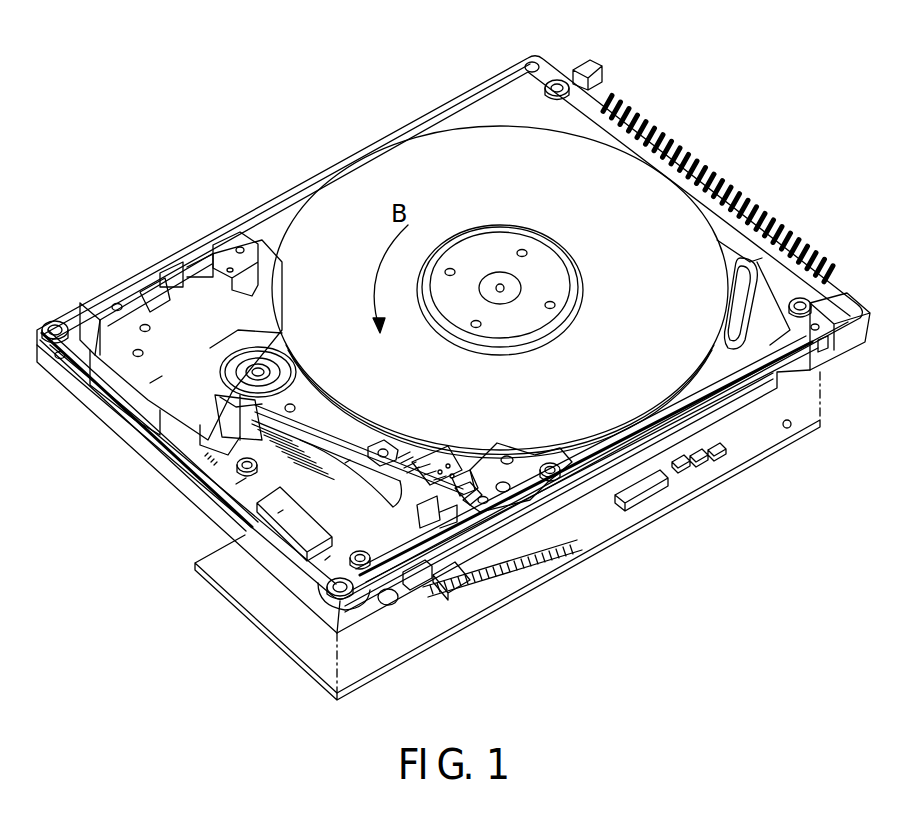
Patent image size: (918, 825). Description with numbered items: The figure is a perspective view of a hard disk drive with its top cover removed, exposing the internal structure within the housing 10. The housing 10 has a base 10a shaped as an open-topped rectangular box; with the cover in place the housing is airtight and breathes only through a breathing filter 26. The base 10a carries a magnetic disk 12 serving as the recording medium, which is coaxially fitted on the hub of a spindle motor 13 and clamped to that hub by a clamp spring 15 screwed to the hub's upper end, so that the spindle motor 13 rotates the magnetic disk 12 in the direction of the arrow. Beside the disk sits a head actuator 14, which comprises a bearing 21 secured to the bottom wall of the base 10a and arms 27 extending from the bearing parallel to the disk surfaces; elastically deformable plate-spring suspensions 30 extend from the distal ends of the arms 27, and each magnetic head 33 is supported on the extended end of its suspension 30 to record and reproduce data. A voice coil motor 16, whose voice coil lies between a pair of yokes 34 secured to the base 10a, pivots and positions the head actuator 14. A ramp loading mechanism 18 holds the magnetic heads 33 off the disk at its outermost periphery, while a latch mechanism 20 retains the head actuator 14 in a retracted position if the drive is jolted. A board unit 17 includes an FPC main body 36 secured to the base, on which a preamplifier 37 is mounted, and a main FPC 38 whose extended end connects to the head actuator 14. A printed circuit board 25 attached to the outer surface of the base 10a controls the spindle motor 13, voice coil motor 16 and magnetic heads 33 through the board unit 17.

The housing 10 is at (487, 76).
The base 10a is at (427, 550).
The magnetic disk 12 is at (420, 160).
The spindle motor 13 is at (586, 286).
The head actuator 14 is at (303, 399).
The clamp spring 15 is at (532, 237).
The voice coil motor 16 is at (152, 293).
The board unit 17 is at (240, 481).
The ramp loading mechanism 18 is at (507, 496).
The latch mechanism 20 is at (214, 246).
The bearing 21 is at (287, 354).
The printed circuit board 25 is at (624, 524).
The breathing filter 26 is at (739, 337).
The arm 27 is at (370, 440).
The suspension 30 is at (430, 470).
The magnetic head 33 is at (468, 494).
The yoke 34 is at (150, 382).
The FPC main body 36 is at (325, 560).
The preamplifier 37 is at (280, 513).
The main FPC 38 is at (343, 463).